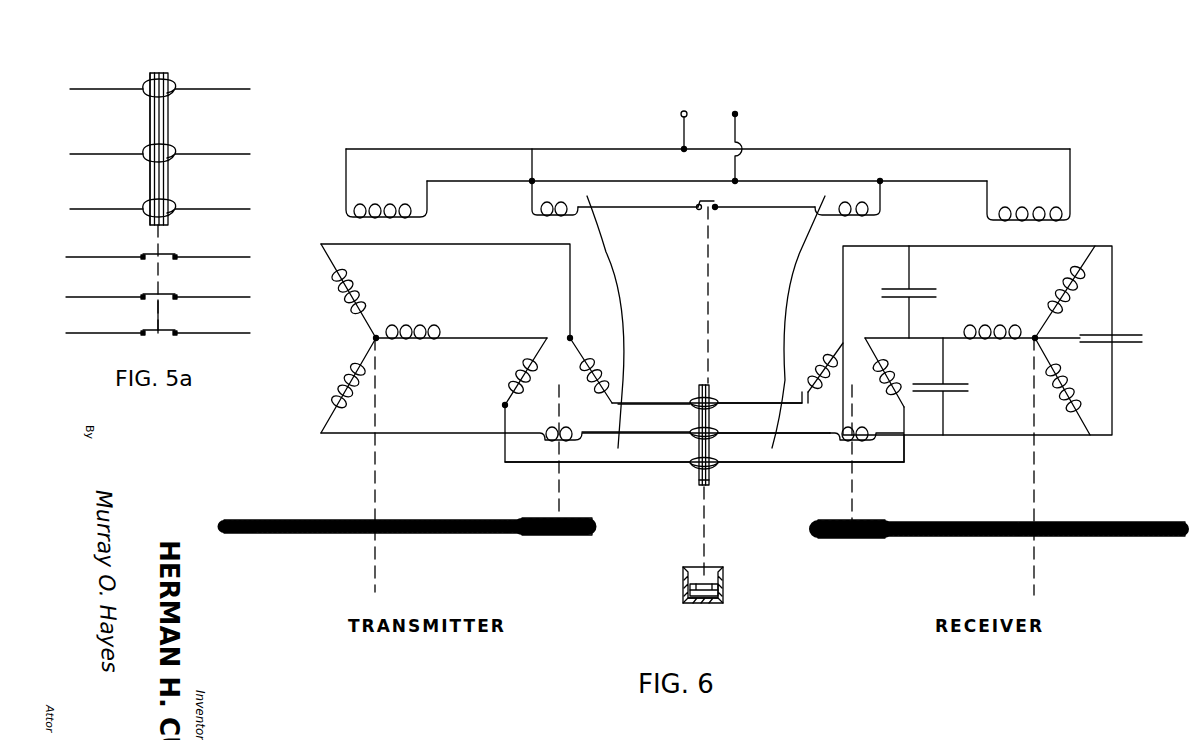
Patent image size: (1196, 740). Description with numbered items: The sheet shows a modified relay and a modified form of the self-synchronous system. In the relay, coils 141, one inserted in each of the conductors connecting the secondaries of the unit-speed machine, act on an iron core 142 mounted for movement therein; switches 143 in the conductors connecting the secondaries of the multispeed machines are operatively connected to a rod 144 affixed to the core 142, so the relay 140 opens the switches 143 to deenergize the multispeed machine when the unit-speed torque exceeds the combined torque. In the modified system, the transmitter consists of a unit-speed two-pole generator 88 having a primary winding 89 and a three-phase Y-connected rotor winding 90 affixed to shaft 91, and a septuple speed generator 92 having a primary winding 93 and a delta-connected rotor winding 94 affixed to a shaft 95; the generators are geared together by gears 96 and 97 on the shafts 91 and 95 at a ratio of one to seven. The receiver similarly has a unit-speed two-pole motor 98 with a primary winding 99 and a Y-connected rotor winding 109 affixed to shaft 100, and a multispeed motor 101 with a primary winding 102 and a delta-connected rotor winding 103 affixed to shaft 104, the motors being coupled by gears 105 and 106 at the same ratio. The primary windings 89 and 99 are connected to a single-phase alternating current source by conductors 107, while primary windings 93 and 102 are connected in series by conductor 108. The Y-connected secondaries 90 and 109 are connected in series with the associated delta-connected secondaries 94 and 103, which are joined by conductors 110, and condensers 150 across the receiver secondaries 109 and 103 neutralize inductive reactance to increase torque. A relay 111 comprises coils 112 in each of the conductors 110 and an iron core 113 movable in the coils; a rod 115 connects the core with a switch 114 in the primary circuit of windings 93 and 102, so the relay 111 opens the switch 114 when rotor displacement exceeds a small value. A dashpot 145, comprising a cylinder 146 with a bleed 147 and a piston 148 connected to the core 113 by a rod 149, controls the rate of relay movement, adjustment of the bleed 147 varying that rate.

In FIG. 6, the unit-speed two-pole generator 88 is at (320, 212).
In FIG. 6, the primary winding 89 is at (386, 183).
In FIG. 6, the three-phase Y-connected secondary or rotor winding 90 is at (430, 338).
In FIG. 6, the shaft 91 is at (378, 483).
In FIG. 6, the septuple speed generator 92 is at (618, 322).
In FIG. 6, the primary winding 93 is at (555, 182).
In FIG. 6, the three-phase delta-connected secondary or rotor winding 94 is at (701, 398).
In FIG. 6, the shaft 95 is at (560, 502).
In FIG. 6, the gear 96 is at (441, 534).
In FIG. 6, the gear 97 is at (560, 538).
In FIG. 6, the unit-speed two-pole motor 98 is at (1097, 215).
In FIG. 6, the primary winding 99 is at (1028, 185).
In FIG. 6, the shaft 100 is at (1033, 492).
In FIG. 6, the multispeed motor 101 is at (790, 322).
In FIG. 6, the primary winding 102 is at (847, 198).
In FIG. 6, the three-phase delta-connected secondary or rotor winding 103 is at (856, 398).
In FIG. 6, the shaft 104 is at (852, 506).
In FIG. 6, the gear 105 is at (1016, 538).
In FIG. 6, the gear 106 is at (845, 540).
In FIG. 6, the conductors 107 is at (589, 177).
In FIG. 6, the conductor 108 is at (603, 207).
In FIG. 6, the three-phase Y-connected secondary or rotor winding 109 is at (983, 340).
In FIG. 6, the conductors 110 is at (688, 460).
In FIG. 6, the relay 111 is at (696, 366).
In FIG. 6, the coils 112 is at (713, 462).
In FIG. 6, the iron core 113 is at (710, 480).
In FIG. 6, the switch 114 is at (714, 210).
In FIG. 6, the rod 115 is at (706, 282).
In FIG. 5A, the relay 140 is at (180, 72).
In FIG. 5A, the coils 141 is at (150, 206).
In FIG. 5A, the iron core 142 is at (170, 133).
In FIG. 5A, the switches 143 is at (126, 279).
In FIG. 5A, the rod 144 is at (160, 330).
In FIG. 6, the dashpot 145 is at (680, 618).
In FIG. 6, the cylinder 146 is at (724, 586).
In FIG. 6, the bleed 147 is at (705, 603).
In FIG. 6, the piston 148 is at (683, 590).
In FIG. 6, the rod 149 is at (707, 532).
In FIG. 6, the condensers 150 is at (946, 392).